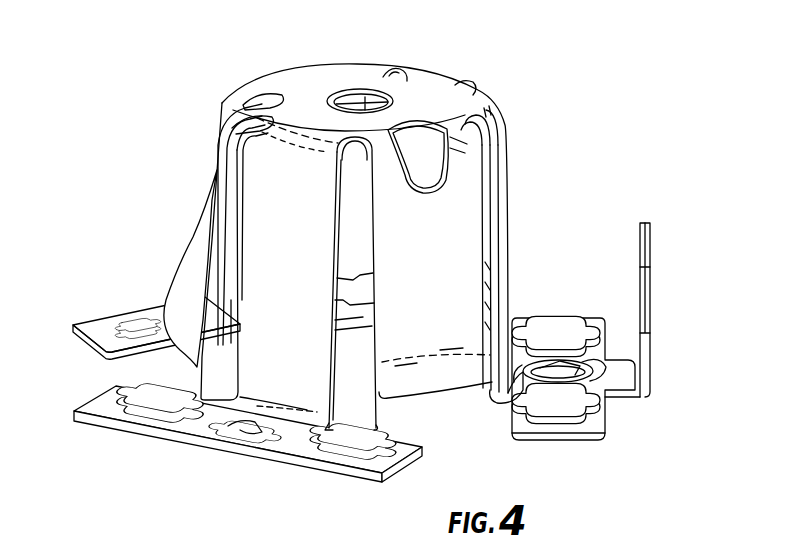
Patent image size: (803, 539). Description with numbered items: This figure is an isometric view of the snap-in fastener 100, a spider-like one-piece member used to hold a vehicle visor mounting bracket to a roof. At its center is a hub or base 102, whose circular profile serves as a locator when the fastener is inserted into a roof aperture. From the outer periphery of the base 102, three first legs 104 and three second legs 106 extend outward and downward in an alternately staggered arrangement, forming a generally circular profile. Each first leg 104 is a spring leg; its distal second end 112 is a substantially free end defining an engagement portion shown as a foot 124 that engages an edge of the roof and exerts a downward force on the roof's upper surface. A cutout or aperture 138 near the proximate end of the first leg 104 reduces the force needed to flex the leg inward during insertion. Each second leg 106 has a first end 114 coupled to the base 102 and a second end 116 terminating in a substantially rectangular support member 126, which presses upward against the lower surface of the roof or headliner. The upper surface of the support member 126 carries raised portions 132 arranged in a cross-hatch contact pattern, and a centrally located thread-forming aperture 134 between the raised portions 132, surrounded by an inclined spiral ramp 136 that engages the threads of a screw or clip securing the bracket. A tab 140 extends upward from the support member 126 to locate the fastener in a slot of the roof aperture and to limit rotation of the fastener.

The snap-in fastener 100 is at (236, 60).
The base 102 is at (364, 77).
The first leg 104 is at (207, 235).
The second leg 106 is at (257, 357).
The second end 112 is at (173, 310).
The first end 114 is at (278, 212).
The second end 116 is at (310, 393).
The foot 124 is at (440, 377).
The support member 126 is at (272, 458).
The raised portions 132 is at (141, 405).
The aperture 134 is at (571, 372).
The ramp 136 is at (597, 376).
The aperture 138 is at (416, 148).
The tab 140 is at (650, 259).